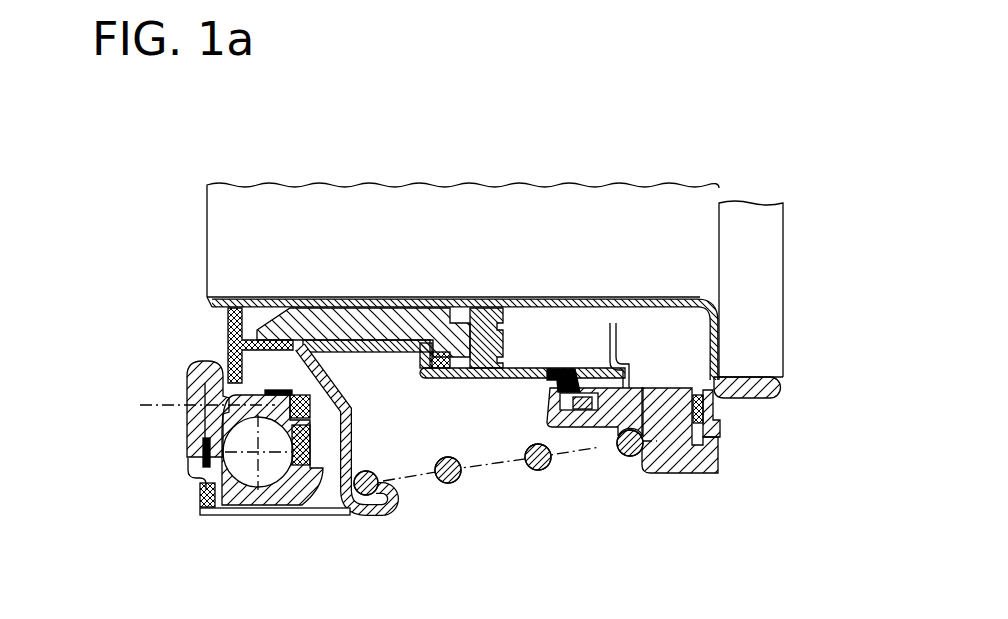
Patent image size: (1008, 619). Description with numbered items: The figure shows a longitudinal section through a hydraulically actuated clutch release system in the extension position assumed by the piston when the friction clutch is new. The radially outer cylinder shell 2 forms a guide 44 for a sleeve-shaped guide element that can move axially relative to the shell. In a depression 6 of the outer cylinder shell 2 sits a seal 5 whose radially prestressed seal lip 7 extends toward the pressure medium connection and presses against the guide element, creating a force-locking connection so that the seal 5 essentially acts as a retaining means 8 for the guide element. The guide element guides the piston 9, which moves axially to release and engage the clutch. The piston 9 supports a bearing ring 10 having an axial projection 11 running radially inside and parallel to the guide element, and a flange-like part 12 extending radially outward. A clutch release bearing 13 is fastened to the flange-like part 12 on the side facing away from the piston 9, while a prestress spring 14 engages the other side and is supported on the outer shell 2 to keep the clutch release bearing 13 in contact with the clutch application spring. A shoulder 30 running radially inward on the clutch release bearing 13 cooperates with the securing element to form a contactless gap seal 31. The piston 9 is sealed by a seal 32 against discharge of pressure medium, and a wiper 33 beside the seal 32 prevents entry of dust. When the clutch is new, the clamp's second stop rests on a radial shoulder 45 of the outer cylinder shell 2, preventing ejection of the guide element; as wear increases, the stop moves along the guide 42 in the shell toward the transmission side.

The outer cylinder shell 2 is at (524, 381).
The seal 5 is at (568, 386).
The depression 6 is at (600, 396).
The seal lip 7 is at (597, 375).
The retaining means 8 is at (565, 378).
The piston 9 is at (372, 325).
The bearing ring 10 is at (343, 447).
The axial projection 11 is at (374, 347).
The flange-like part 12 is at (356, 512).
The clutch release bearing 13 is at (178, 443).
The prestress spring 14 is at (452, 485).
The shoulder 30 is at (193, 375).
The contactless gap seal 31 is at (222, 358).
The seal 32 is at (478, 298).
The wiper 33 is at (443, 379).
The guide 42 is at (662, 372).
The guide 44 is at (505, 308).
The radial shoulder 45 is at (662, 372).